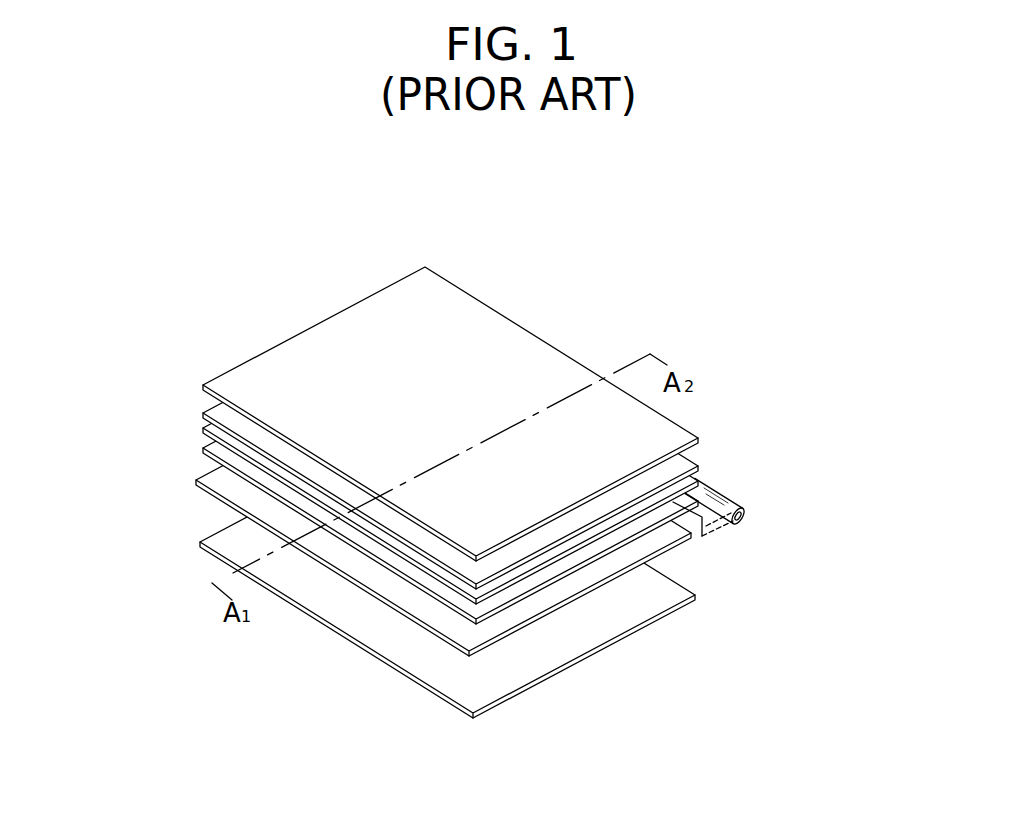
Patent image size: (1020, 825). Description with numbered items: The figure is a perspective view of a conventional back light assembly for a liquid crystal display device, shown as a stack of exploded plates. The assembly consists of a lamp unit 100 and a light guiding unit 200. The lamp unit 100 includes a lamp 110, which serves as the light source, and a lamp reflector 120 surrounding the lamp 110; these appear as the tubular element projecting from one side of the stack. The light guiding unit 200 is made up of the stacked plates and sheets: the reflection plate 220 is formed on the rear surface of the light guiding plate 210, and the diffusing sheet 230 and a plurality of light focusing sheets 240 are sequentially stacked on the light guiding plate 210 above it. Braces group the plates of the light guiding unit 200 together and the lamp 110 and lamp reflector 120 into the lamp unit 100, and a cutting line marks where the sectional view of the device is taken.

The lamp unit 100 is at (789, 538).
The lamp 110 is at (745, 526).
The lamp reflector 120 is at (743, 504).
The light guiding unit 200 is at (371, 492).
The light guiding plate 210 is at (197, 482).
The reflection plate 220 is at (200, 548).
The diffusing sheet 230 is at (201, 448).
The light focusing sheets 240 is at (113, 588).